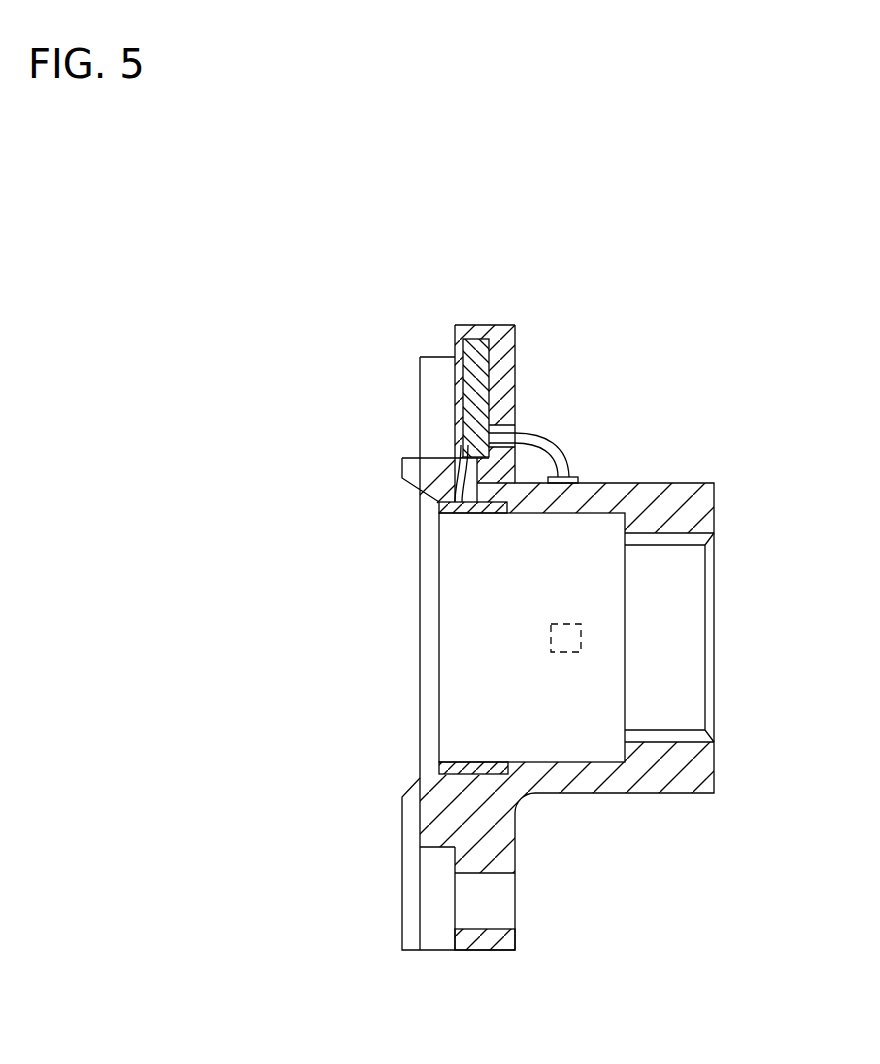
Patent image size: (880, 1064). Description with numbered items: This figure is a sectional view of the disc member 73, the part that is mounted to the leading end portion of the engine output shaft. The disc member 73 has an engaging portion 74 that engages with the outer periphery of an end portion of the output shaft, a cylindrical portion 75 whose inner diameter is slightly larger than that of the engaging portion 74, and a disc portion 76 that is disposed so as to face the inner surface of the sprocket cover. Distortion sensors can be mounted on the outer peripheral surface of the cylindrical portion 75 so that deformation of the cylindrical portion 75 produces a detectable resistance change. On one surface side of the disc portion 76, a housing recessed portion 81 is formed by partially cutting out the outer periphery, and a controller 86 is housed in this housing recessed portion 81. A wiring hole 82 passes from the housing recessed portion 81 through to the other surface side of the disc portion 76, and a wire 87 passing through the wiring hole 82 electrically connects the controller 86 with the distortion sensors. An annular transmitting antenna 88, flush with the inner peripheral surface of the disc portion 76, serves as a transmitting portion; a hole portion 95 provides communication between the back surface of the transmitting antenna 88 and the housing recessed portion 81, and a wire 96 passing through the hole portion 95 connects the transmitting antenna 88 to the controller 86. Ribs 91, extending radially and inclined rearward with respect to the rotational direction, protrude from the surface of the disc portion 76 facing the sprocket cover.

The disc member 73 is at (397, 331).
The engaging portion 74 is at (698, 515).
The cylindrical portion 75 is at (574, 477).
The disc portion 76 is at (490, 940).
The housing recessed portion 81 is at (468, 345).
The wiring hole 82 is at (500, 430).
The controller 86 is at (476, 395).
The wire 87 is at (545, 443).
The transmitting antenna 88 is at (475, 768).
The ribs 91 is at (412, 468).
The hole portion 95 is at (450, 497).
The wire 96 is at (478, 513).